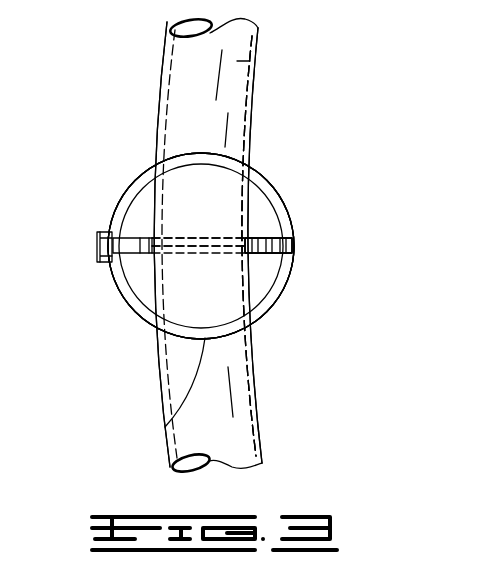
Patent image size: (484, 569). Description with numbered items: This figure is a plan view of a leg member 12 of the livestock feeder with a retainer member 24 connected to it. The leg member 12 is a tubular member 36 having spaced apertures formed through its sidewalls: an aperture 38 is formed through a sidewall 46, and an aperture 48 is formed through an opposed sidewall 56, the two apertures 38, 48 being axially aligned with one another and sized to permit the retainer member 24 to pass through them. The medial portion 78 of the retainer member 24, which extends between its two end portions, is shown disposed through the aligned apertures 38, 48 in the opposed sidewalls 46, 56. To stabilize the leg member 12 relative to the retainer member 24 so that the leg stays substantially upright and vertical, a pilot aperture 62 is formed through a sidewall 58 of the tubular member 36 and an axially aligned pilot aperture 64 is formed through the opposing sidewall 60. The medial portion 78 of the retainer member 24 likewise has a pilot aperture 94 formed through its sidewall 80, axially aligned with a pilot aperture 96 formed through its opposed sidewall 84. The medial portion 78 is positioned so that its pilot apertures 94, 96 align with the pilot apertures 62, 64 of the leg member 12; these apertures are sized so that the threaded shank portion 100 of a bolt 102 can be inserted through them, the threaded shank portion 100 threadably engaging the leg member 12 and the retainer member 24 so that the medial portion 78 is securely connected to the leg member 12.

The leg member 12 is at (272, 180).
The retainer member 24 is at (158, 85).
The tubular member 36 is at (268, 313).
The aperture 38 is at (245, 133).
The sidewall 46 is at (203, 158).
The aperture 48 is at (253, 350).
The opposed sidewall 56 is at (165, 427).
The sidewall 58 is at (133, 312).
The sidewall 60 is at (291, 234).
The pilot aperture 62 is at (113, 228).
The pilot aperture 64 is at (292, 258).
The medial portion 78 is at (237, 61).
The sidewall 80 is at (157, 382).
The opposed sidewall 84 is at (253, 390).
The pilot aperture 94 is at (163, 252).
The pilot aperture 96 is at (235, 243).
The threaded shank portion 100 is at (258, 256).
The bolt 102 is at (93, 248).